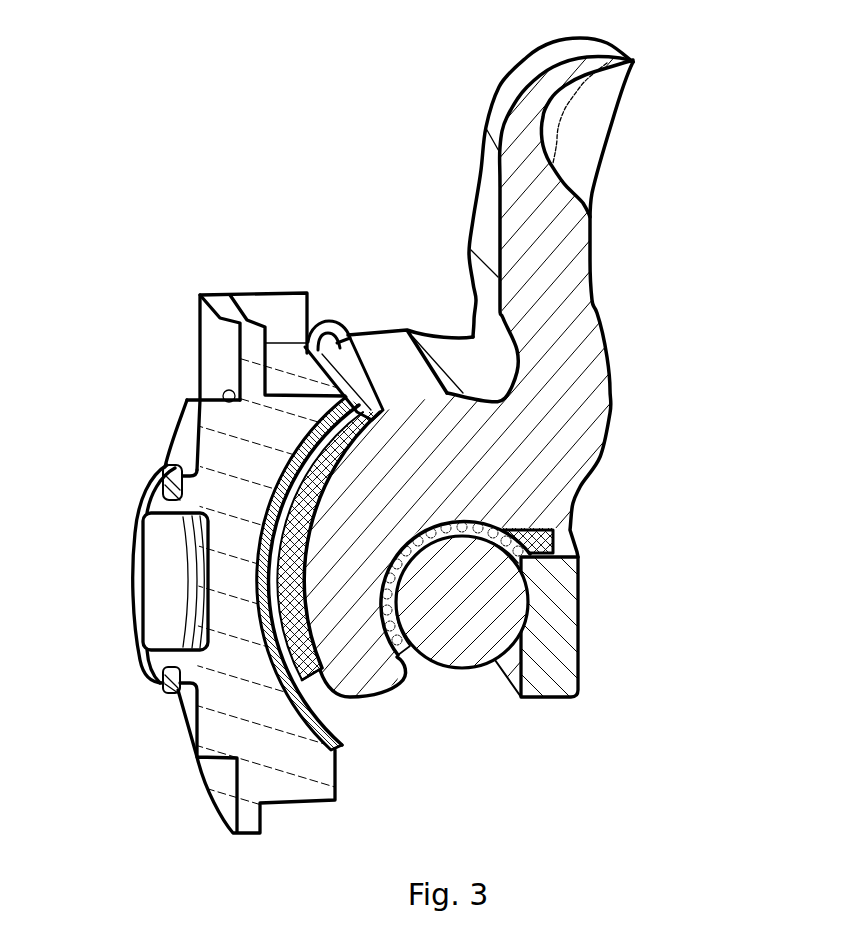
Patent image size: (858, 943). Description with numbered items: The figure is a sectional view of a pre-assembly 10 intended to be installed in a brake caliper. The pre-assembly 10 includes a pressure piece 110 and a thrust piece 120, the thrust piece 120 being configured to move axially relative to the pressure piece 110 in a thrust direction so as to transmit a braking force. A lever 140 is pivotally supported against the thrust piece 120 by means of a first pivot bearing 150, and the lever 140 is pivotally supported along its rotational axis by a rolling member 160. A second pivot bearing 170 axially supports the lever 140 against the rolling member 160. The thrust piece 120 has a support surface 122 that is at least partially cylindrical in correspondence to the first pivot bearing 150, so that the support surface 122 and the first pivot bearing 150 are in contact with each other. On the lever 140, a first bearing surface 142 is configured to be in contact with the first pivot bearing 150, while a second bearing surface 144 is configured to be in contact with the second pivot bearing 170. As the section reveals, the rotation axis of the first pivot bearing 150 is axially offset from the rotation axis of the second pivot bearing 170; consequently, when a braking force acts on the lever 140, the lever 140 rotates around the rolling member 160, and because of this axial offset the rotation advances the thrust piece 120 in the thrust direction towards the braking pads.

The pre-assembly 10 is at (429, 471).
The pressure piece 110 is at (560, 643).
The thrust piece 120 is at (230, 433).
The support surface 122 is at (317, 722).
The lever 140 is at (592, 243).
The first bearing surface 142 is at (370, 377).
The second bearing surface 144 is at (487, 517).
The first pivot bearing 150 is at (287, 624).
The rolling member 160 is at (460, 680).
The second pivot bearing 170 is at (568, 540).